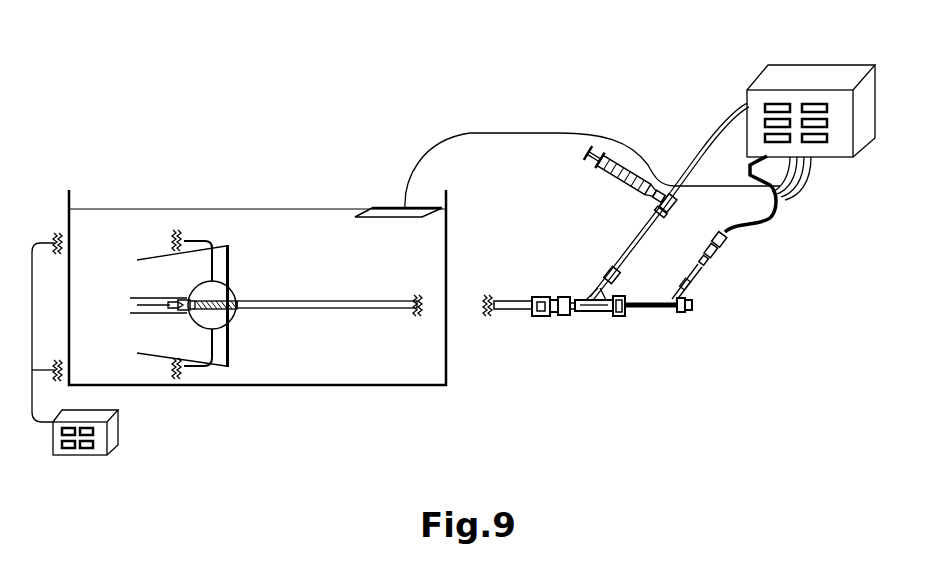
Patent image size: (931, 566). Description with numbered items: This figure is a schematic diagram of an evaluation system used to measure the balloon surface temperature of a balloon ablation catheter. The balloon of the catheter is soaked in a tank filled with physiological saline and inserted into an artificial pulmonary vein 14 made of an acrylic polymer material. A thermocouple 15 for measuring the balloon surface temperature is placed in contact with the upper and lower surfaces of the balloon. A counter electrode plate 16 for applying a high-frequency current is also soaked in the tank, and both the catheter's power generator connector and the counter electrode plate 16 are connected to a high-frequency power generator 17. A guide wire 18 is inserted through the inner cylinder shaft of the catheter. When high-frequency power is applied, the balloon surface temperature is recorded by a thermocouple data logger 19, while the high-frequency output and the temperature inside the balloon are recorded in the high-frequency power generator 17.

The pulmonary vein 14 is at (233, 273).
The thermocouple 15 is at (185, 240).
The counter electrode plate 16 is at (383, 215).
The high-frequency power generator 17 is at (816, 68).
The guide wire 18 is at (150, 305).
The thermocouple data logger 19 is at (96, 458).